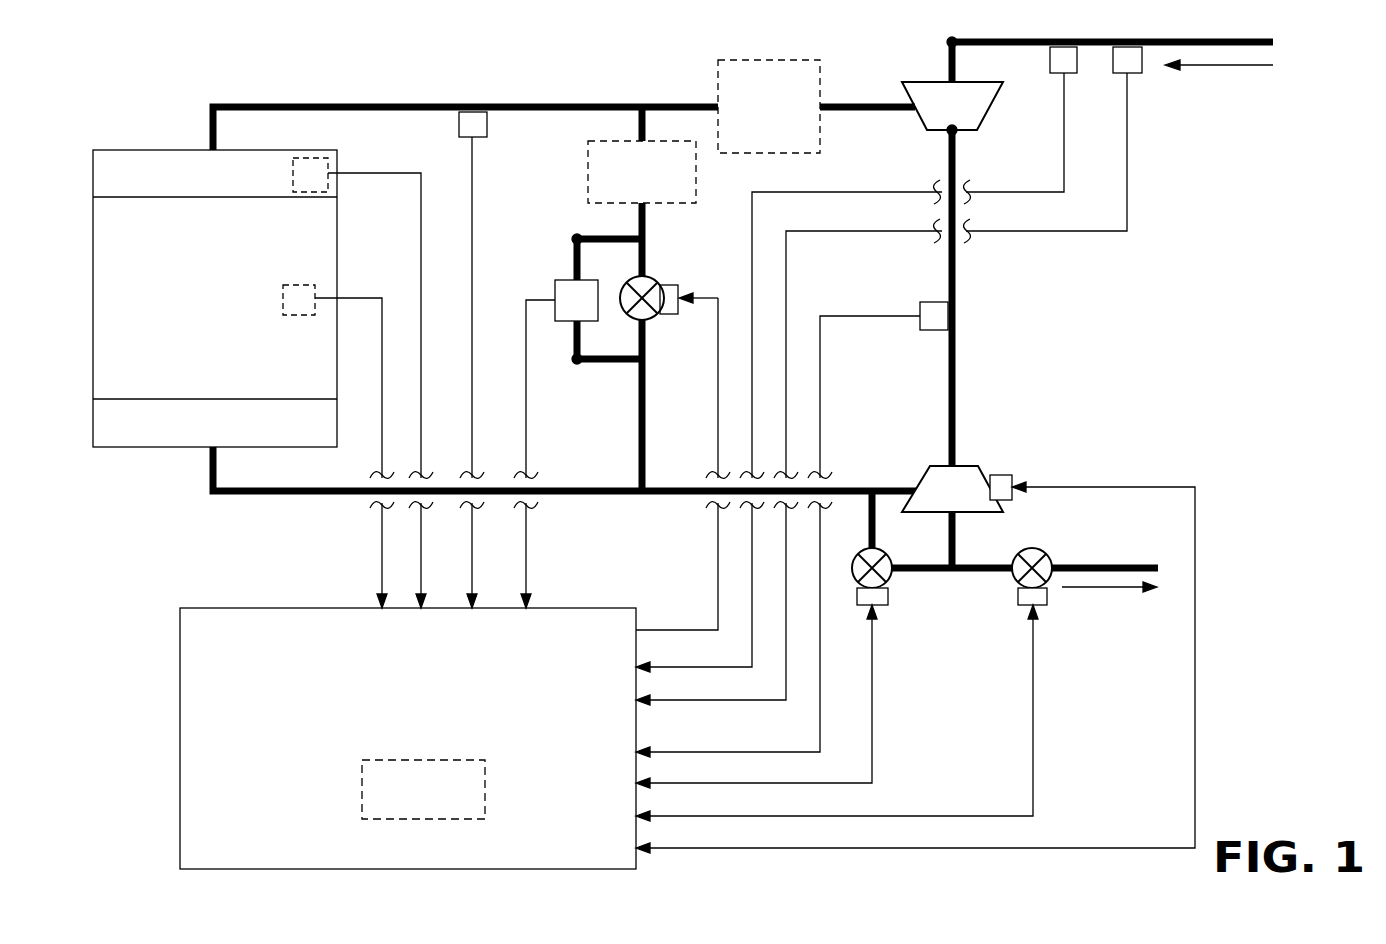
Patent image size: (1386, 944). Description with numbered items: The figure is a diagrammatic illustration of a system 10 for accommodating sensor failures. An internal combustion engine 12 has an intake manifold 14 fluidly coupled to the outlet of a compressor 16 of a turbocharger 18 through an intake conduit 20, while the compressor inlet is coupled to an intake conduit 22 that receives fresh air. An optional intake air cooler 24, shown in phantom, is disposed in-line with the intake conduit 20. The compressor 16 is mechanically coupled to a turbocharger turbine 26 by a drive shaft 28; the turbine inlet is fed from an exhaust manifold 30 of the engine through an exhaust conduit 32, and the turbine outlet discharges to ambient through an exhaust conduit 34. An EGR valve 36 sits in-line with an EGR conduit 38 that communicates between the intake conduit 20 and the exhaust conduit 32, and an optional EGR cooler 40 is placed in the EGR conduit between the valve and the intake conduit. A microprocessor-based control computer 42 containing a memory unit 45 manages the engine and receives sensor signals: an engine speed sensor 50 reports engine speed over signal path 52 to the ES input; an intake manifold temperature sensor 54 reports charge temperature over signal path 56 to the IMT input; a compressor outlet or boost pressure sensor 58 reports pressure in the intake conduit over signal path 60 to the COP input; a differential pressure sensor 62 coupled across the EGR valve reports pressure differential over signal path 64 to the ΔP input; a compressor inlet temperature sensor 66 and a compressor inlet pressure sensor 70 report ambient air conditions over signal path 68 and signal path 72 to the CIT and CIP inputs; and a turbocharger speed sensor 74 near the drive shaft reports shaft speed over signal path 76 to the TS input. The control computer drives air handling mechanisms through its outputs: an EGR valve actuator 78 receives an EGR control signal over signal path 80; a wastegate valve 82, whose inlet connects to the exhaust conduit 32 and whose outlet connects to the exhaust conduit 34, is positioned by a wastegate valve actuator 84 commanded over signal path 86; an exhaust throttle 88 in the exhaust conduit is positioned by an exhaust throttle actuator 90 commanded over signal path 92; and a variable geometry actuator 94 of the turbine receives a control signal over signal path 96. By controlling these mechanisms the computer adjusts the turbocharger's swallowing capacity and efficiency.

The system 10 is at (165, 566).
The internal combustion engine 12 is at (93, 290).
The intake manifold 14 is at (122, 150).
The compressor 16 is at (925, 82).
The turbocharger 18 is at (1130, 348).
The intake conduit 20 is at (330, 107).
The intake conduit 22 is at (1020, 46).
The intake air cooler 24 is at (718, 72).
The turbocharger turbine 26 is at (939, 466).
The drive shaft 28 is at (956, 343).
The exhaust manifold 30 is at (137, 448).
The exhaust conduit 32 is at (585, 494).
The exhaust conduit 34 is at (956, 530).
The EGR valve 36 is at (655, 280).
The EGR conduit 38 is at (640, 428).
The EGR cooler 40 is at (588, 158).
The control computer 42 is at (228, 608).
The memory unit 45 is at (410, 760).
The engine speed sensor 50 is at (299, 315).
The signal path 52 is at (355, 298).
The intake manifold temperature sensor 54 is at (308, 192).
The signal path 56 is at (375, 173).
The compressor outlet pressure sensor 58 is at (487, 125).
The signal path 60 is at (472, 185).
The differential pressure sensor 62 is at (555, 290).
The signal path 64 is at (526, 384).
The compressor inlet temperature sensor 66 is at (1068, 73).
The signal path 68 is at (1064, 155).
The compressor inlet pressure sensor 70 is at (1132, 73).
The signal path 72 is at (1128, 196).
The turbocharger speed sensor 74 is at (930, 302).
The signal path 76 is at (853, 316).
The EGR valve actuator 78 is at (665, 314).
The signal path 80 is at (688, 630).
The wastegate valve 82 is at (866, 550).
The wastegate valve actuator 84 is at (888, 600).
The signal path 86 is at (874, 724).
The exhaust throttle 88 is at (1038, 549).
The exhaust throttle actuator 90 is at (1018, 598).
The signal path 92 is at (1033, 728).
The variable geometry actuator 94 is at (992, 475).
The signal path 96 is at (1122, 487).